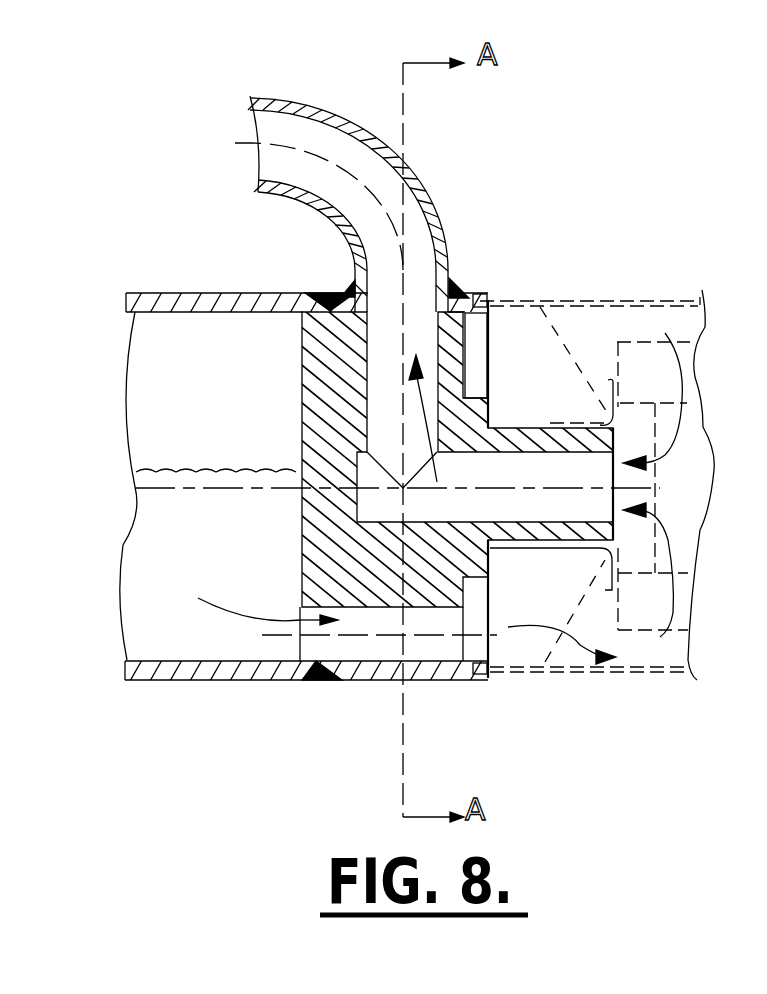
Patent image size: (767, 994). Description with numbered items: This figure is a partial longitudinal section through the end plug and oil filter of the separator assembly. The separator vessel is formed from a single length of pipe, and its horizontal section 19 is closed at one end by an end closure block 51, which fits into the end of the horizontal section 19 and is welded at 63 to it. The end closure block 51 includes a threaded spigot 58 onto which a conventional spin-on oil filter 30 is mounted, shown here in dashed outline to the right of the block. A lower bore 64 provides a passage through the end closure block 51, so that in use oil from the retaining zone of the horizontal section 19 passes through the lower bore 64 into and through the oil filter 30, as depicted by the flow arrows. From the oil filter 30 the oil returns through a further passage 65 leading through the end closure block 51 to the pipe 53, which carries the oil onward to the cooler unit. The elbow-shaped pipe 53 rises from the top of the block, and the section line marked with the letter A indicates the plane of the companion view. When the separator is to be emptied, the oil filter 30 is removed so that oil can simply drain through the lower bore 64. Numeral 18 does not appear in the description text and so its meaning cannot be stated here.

The pipe 53 is at (410, 173).
The further passage 65 is at (383, 388).
The oil filter 30 is at (612, 298).
The tank interior 18 is at (153, 610).
The horizontal section 19 is at (175, 682).
The weld 63 is at (315, 682).
The lower bore 64 is at (378, 648).
The end closure block 51 is at (435, 680).
The threaded spigot 58 is at (563, 535).